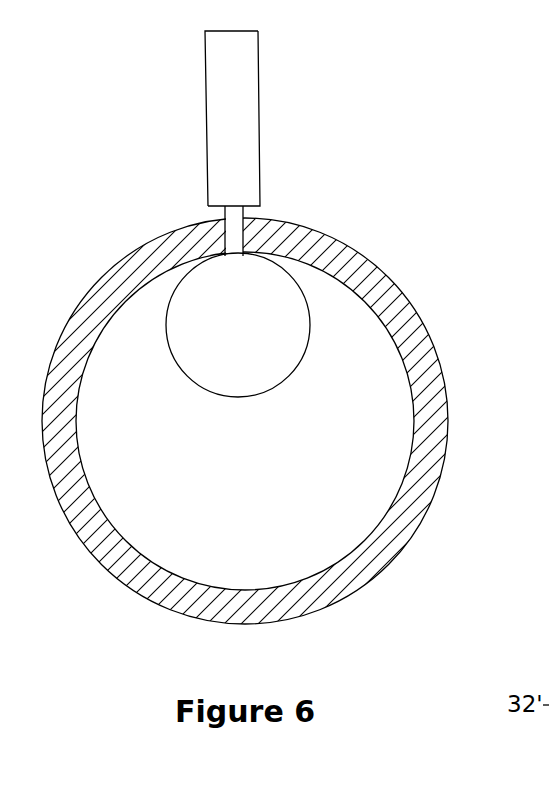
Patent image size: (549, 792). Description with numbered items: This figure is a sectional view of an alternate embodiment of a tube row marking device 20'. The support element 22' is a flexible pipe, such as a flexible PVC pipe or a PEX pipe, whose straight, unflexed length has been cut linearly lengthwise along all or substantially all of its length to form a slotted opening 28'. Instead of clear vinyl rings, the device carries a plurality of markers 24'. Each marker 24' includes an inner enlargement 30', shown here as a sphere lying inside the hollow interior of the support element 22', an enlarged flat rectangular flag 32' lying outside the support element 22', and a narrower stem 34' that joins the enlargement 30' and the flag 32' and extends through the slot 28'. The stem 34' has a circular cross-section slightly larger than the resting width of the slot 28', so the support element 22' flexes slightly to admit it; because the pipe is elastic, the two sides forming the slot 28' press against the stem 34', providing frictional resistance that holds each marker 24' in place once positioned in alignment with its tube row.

The tube row marking device 20' is at (269, 380).
The support element 22' is at (274, 420).
The marker 24' is at (297, 103).
The slotted opening 28' is at (288, 214).
The inner enlargement 30' is at (253, 357).
The flag 32' is at (164, 118).
The stem 34' is at (175, 200).